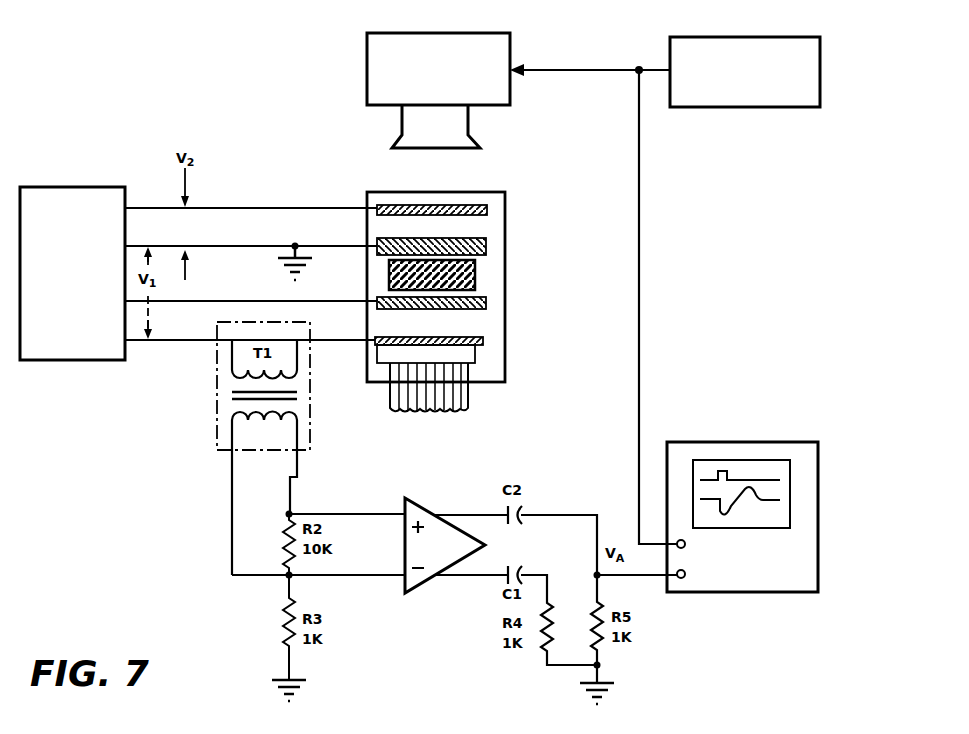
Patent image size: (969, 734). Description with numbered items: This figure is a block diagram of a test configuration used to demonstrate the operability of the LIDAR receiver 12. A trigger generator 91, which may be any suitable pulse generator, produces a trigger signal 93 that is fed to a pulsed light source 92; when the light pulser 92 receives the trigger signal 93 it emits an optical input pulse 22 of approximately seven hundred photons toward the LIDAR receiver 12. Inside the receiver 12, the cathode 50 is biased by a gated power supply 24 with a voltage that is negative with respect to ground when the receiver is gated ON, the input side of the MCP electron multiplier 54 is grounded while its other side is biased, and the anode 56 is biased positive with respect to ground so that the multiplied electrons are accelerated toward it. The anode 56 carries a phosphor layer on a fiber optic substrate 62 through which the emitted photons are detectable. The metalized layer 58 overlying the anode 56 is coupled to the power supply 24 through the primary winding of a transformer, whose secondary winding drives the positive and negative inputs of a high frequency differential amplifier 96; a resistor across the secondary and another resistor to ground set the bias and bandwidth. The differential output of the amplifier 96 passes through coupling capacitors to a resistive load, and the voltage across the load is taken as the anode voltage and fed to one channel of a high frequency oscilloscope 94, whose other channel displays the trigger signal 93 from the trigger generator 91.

The LIDAR receiver 12 is at (393, 192).
The optical input pulse 22 is at (435, 160).
The gated power supply 24 is at (88, 187).
The cathode 50 is at (494, 192).
The MCP electron multiplier 54 is at (513, 235).
The anode 56 is at (513, 332).
The metalized layer 58 is at (460, 321).
The fiber optic substrate 62 is at (468, 387).
The trigger generator 91 is at (770, 37).
The pulsed light source 92 is at (493, 33).
The trigger signal 93 is at (639, 285).
The oscilloscope 94 is at (772, 442).
The differential amplifier 96 is at (428, 498).